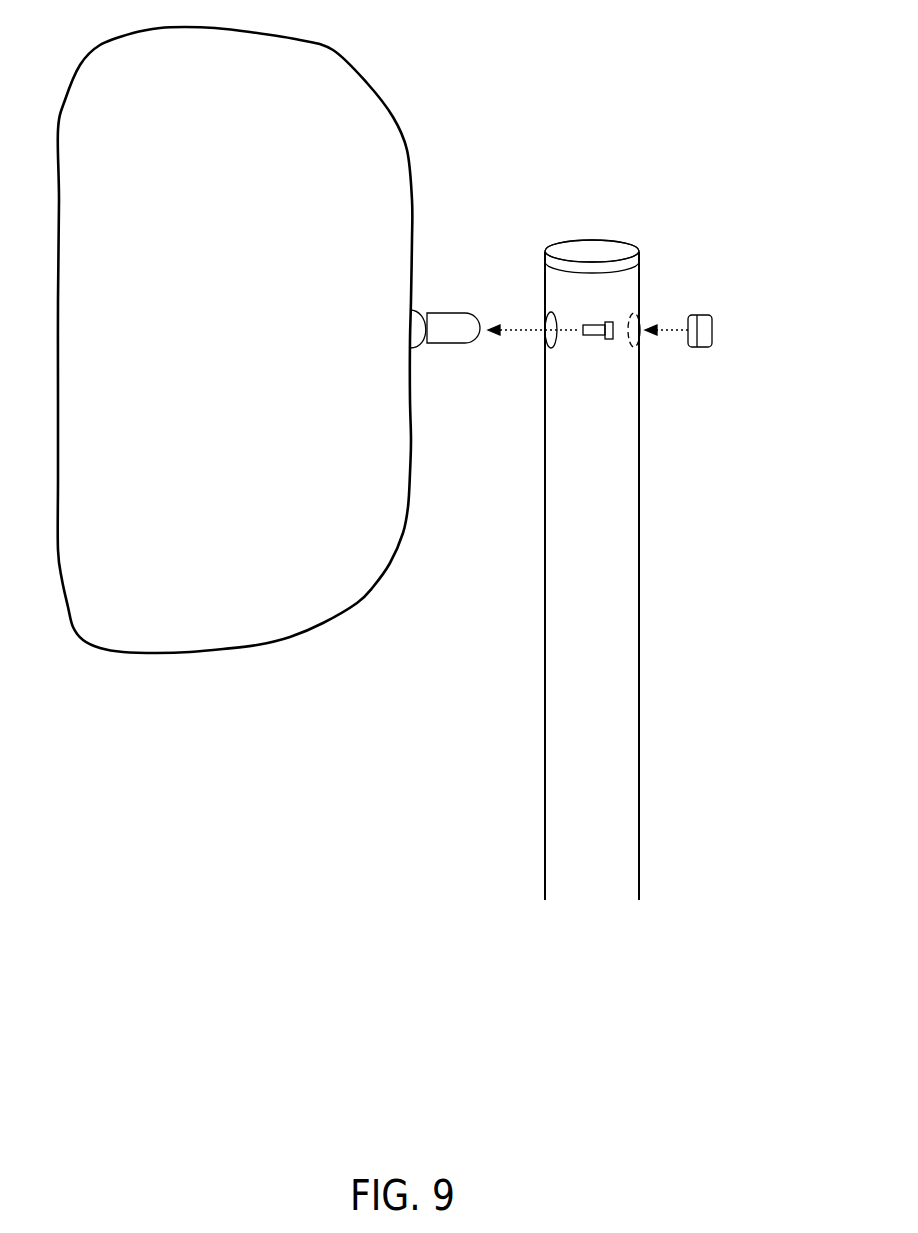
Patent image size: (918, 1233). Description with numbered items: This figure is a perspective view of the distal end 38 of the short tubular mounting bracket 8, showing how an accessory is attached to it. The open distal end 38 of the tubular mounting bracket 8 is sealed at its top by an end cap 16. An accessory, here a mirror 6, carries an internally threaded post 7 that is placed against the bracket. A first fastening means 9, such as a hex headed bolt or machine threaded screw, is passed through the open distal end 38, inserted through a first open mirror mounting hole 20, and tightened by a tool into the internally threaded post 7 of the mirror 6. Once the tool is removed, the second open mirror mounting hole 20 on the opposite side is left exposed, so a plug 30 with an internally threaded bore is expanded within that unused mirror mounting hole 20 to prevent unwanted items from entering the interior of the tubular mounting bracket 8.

The mirror 6 is at (172, 60).
The internally threaded post 7 is at (443, 345).
The tubular mounting bracket 8 is at (640, 752).
The first fastening means 9 is at (600, 337).
The end cap 16 is at (593, 244).
The mirror mounting hole 20 is at (538, 305).
The plug 30 is at (712, 333).
The distal end 38 is at (578, 570).